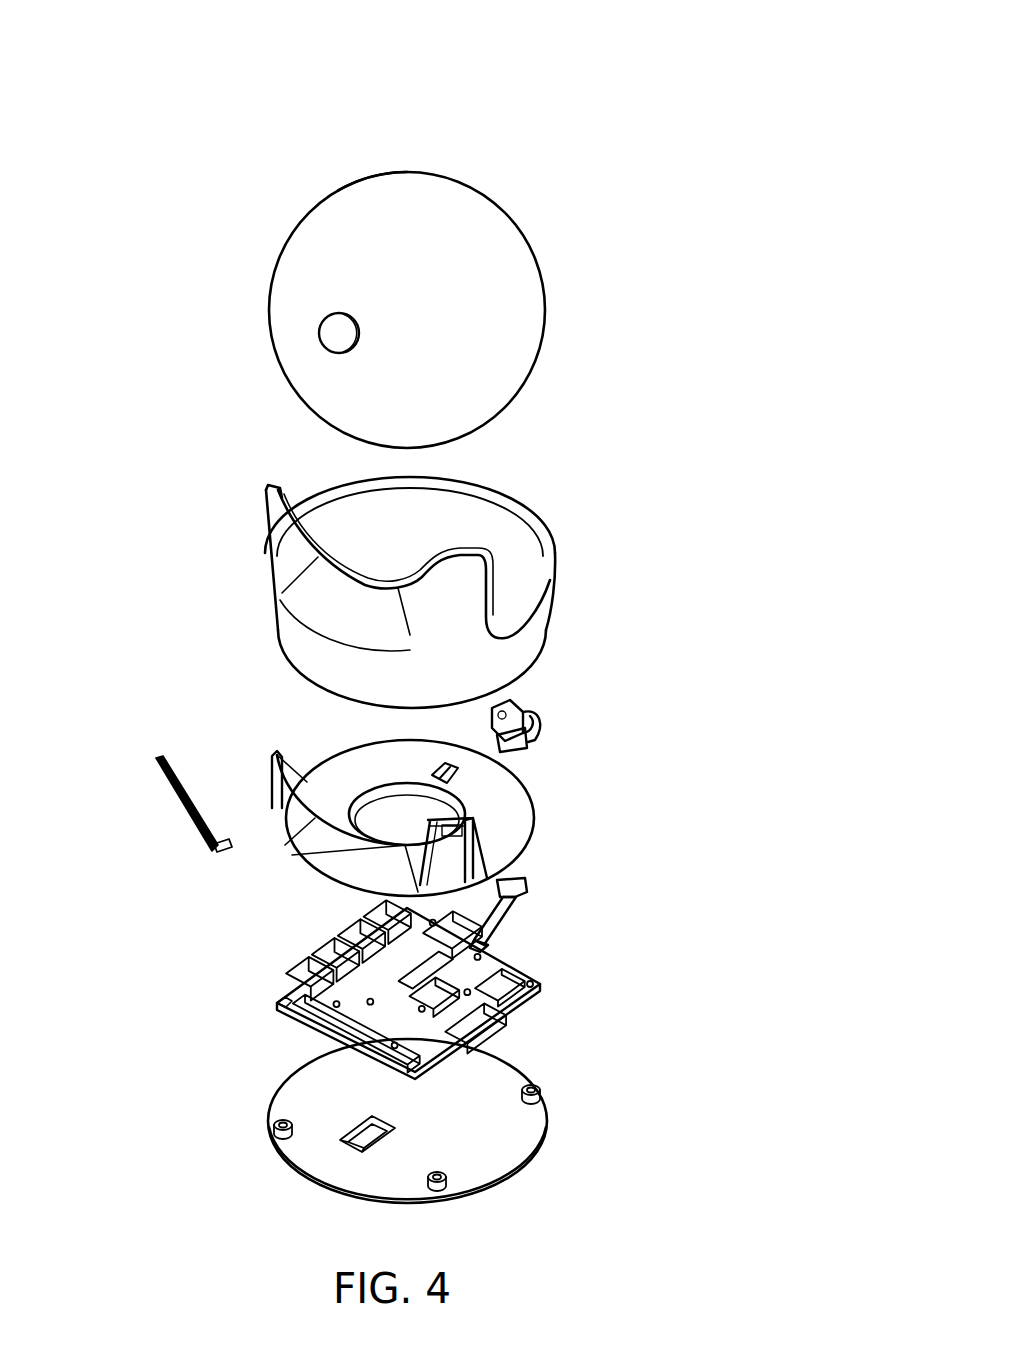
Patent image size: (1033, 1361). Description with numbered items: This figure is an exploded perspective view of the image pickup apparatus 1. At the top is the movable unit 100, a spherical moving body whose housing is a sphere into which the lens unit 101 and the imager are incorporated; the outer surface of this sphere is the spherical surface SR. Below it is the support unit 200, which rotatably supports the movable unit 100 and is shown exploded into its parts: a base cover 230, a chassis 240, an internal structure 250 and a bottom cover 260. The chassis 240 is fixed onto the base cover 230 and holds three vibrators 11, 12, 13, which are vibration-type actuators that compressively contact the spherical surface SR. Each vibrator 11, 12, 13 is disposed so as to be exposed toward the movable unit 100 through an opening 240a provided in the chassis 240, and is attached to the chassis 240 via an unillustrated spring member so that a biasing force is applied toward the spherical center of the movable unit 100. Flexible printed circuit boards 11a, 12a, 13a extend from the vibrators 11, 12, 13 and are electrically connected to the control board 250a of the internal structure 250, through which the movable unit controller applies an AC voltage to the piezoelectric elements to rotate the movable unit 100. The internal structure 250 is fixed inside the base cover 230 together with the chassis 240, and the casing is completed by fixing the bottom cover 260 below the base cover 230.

The image pickup apparatus 1 is at (505, 117).
The spherical surface SR is at (397, 173).
The movable unit 100 is at (360, 233).
The lens unit 101 is at (332, 331).
The support unit 200 is at (742, 439).
The base cover 230 is at (543, 550).
The chassis 240 is at (515, 866).
The opening 240a is at (273, 763).
The vibrator 11 is at (523, 713).
The flexible printed circuit board 11a is at (523, 740).
The vibrator 12 is at (515, 888).
The flexible printed circuit board 12a is at (497, 923).
The vibrator 13 is at (160, 770).
The flexible printed circuit board 13a is at (175, 800).
The internal structure 250 is at (545, 978).
The control board 250a is at (280, 1003).
The bottom cover 260 is at (547, 1118).